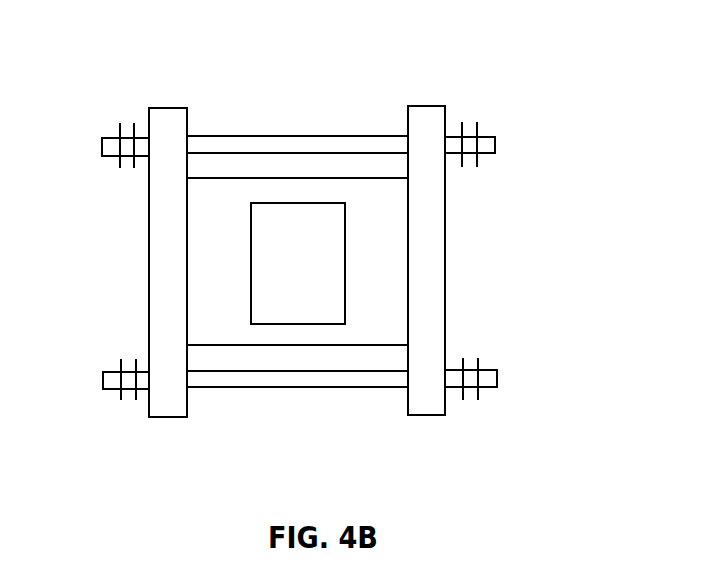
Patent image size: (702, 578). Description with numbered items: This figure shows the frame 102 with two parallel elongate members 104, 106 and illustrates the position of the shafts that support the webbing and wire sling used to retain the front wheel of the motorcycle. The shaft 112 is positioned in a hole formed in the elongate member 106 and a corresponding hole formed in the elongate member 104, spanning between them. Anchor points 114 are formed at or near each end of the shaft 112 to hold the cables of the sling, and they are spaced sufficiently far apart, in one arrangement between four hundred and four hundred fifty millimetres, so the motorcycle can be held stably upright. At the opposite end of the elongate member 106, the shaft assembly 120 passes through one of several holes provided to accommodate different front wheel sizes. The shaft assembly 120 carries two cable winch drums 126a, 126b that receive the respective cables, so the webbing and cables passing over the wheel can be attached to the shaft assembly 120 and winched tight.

The frame assembly 102 is at (518, 268).
The elongate member 104 is at (167, 108).
The elongate member 106 is at (425, 105).
The shaft 112 is at (287, 137).
The anchor points 114 is at (128, 127).
The shaft assembly 120 is at (332, 387).
The cable winch drum 126a is at (129, 400).
The cable winch drum 126b is at (470, 397).